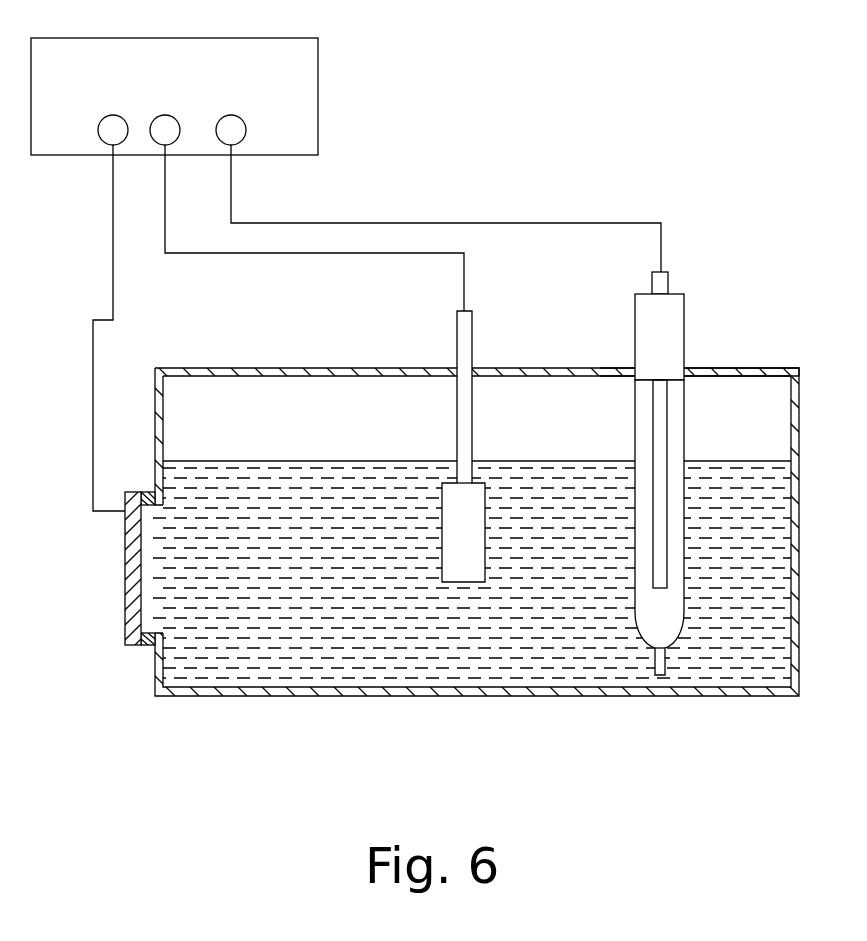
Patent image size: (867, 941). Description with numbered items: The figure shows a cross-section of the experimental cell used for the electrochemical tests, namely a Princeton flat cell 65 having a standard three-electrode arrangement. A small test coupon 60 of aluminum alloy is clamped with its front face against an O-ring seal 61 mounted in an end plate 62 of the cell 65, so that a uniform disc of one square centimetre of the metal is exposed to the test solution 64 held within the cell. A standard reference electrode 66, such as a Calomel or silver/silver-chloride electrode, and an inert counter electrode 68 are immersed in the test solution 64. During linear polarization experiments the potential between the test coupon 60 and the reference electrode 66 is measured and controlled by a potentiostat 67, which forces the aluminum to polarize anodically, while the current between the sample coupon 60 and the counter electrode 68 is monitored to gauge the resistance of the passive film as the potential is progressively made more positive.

The test coupon 60 is at (125, 585).
The O-ring seal 61 is at (150, 646).
The end plate 62 is at (154, 391).
The test solution 64 is at (284, 611).
The cell 65 is at (740, 367).
The reference electrode 66 is at (648, 613).
The potentiostat 67 is at (298, 108).
The counter electrode 68 is at (470, 567).